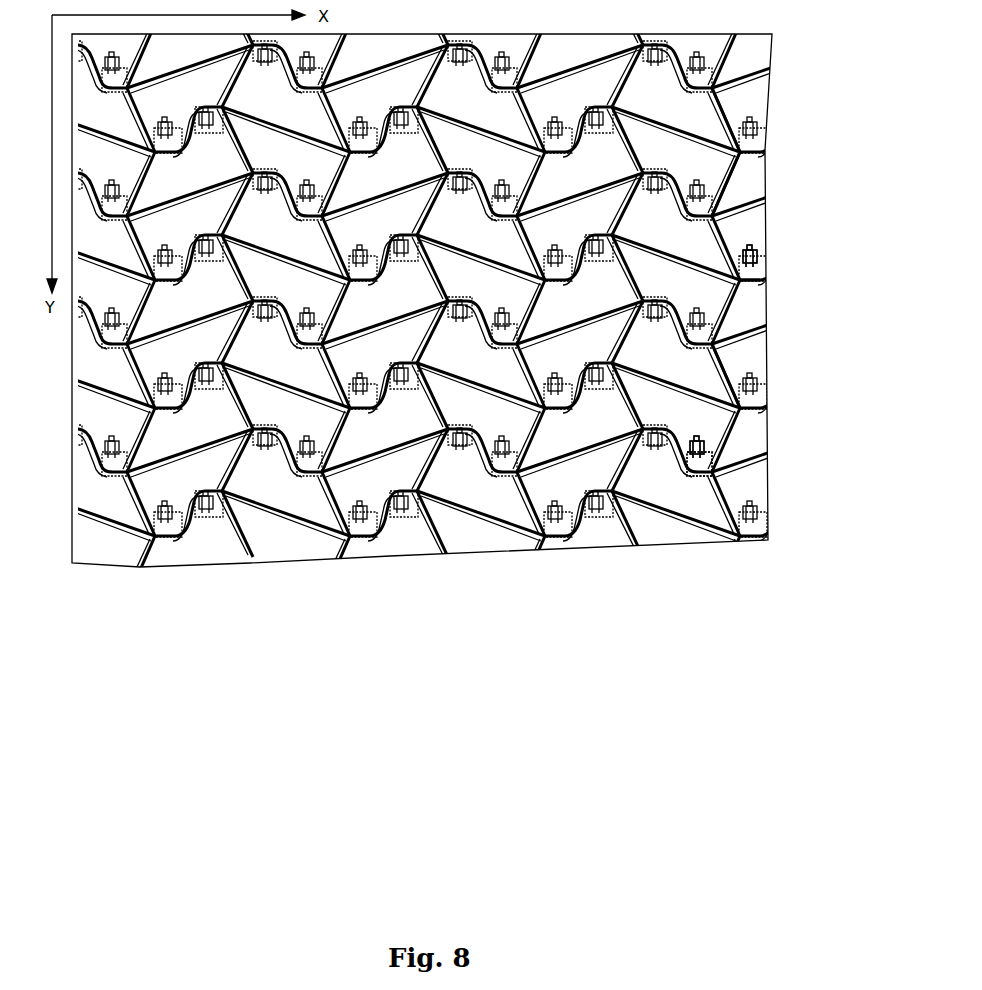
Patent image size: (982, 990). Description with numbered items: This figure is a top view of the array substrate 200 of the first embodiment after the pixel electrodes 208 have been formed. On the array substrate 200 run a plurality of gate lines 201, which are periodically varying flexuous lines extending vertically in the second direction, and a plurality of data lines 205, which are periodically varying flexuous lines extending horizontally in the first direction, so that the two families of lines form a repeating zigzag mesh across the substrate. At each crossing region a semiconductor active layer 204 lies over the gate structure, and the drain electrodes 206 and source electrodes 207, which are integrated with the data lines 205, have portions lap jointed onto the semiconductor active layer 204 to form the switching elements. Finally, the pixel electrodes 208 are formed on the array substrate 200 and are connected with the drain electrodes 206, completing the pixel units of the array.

The array substrate 200 is at (750, 42).
The gate lines 201 is at (710, 100).
The semiconductor active layer 204 is at (705, 460).
The data lines 205 is at (735, 207).
The drain electrodes 206 is at (762, 257).
The source electrodes 207 is at (748, 283).
The pixel electrodes 208 is at (700, 365).